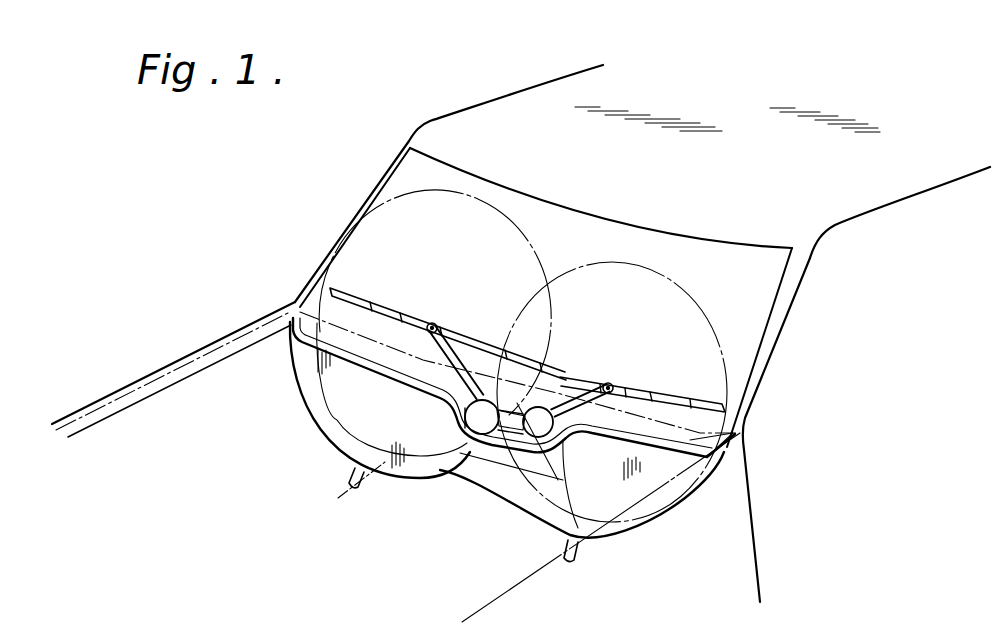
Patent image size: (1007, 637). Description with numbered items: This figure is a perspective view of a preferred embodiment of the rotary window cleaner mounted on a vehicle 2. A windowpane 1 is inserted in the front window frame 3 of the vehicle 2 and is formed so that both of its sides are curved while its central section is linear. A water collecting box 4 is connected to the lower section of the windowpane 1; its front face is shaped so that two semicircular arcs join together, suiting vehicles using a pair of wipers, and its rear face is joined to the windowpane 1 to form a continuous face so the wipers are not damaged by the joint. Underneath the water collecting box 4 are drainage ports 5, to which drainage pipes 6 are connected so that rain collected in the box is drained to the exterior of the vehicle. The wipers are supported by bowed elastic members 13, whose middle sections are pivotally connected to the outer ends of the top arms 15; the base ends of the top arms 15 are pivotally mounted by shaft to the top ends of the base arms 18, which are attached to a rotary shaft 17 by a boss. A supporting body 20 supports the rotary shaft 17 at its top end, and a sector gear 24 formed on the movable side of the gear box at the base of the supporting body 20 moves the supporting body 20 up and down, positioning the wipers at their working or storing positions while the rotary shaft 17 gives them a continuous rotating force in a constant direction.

The windowpane 1 is at (570, 223).
The vehicle 2 is at (468, 113).
The front window frame 3 is at (797, 282).
The water collecting box 4 is at (628, 528).
The drainage port 5 is at (375, 483).
The drainage pipe 6 is at (350, 500).
The bowed elastic member 13 is at (345, 293).
The top arm 15 is at (382, 308).
The rotary shaft 17 is at (437, 322).
The base arm 18 is at (413, 323).
The supporting body 20 is at (463, 348).
The sector gear 24 is at (497, 380).